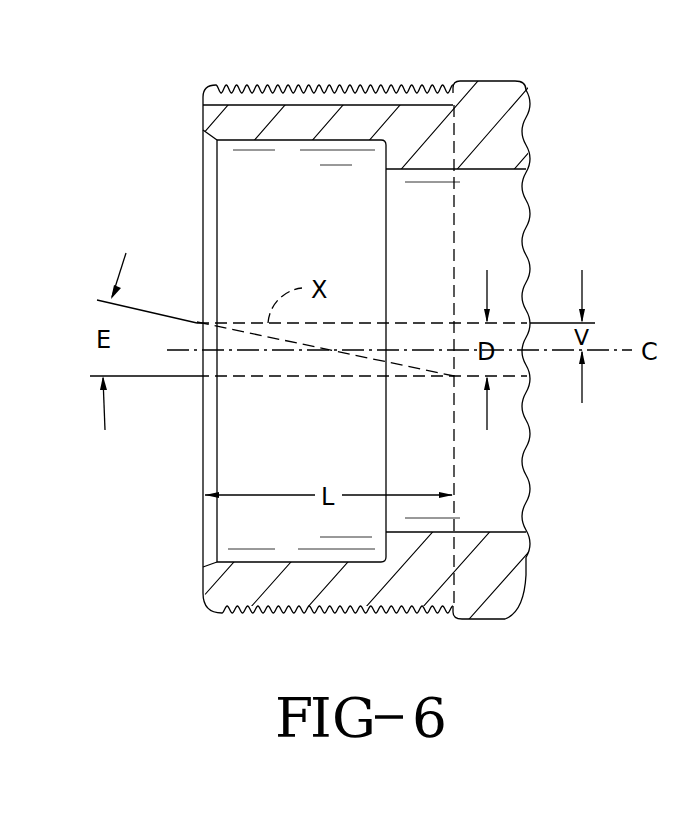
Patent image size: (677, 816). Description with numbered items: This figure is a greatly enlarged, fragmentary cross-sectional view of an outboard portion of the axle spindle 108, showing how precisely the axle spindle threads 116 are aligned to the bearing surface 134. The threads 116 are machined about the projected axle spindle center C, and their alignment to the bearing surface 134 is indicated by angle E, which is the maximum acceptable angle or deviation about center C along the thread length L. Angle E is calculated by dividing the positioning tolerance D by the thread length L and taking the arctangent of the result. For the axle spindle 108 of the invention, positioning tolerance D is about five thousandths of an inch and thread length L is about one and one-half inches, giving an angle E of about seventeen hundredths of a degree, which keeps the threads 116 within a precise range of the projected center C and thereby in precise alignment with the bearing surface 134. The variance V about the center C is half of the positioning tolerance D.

The axle spindle 108 is at (203, 583).
The axle spindle threads 116 is at (228, 616).
The axle spindle bearing surface 134 is at (491, 619).